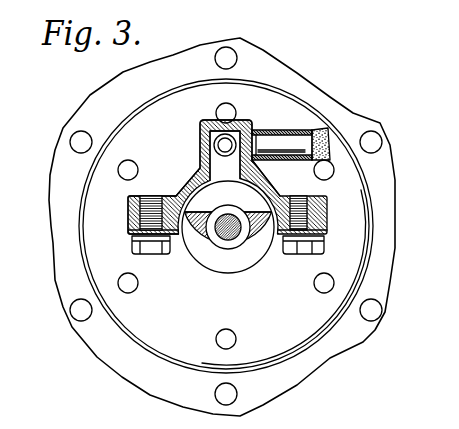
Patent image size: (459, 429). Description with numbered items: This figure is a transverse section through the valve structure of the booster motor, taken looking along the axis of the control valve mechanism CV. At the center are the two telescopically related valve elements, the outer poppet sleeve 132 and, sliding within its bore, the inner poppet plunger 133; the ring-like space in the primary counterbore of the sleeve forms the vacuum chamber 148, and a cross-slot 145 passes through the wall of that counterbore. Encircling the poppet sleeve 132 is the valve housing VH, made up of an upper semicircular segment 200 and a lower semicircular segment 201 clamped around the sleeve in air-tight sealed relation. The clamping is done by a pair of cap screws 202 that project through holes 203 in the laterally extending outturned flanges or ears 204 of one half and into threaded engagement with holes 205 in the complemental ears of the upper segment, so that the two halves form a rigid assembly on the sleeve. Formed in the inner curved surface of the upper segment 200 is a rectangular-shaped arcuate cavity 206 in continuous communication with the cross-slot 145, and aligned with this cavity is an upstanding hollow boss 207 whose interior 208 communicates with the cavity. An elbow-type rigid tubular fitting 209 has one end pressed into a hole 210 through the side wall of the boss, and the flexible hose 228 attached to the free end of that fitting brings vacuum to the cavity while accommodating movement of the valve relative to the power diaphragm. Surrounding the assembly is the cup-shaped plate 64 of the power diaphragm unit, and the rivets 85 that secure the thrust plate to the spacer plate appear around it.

The cup-shaped plate 64 is at (295, 115).
The rivets 85 is at (220, 337).
The hole 210 is at (224, 101).
The elbow-type rigid tubular fitting 209 is at (255, 140).
The flexible conduit or hose 228 is at (318, 152).
The hollow embossment or boss 207 is at (216, 122).
The interior of boss 208 is at (206, 155).
The cross-slot 145 is at (216, 188).
The valve housing VH is at (175, 182).
The upper semicircular segment 200 is at (192, 186).
The arcuate cavity 206 is at (263, 194).
The threaded holes 205 is at (128, 200).
The holes 203 is at (140, 226).
The cap screws 202 is at (133, 245).
The outturned flanges or ears 204 is at (325, 234).
The vacuum chamber 148 is at (195, 259).
The lower semicircular segment 201 is at (237, 275).
The control valve mechanism CV is at (246, 280).
The poppet sleeve 132 is at (249, 272).
The poppet plunger 133 is at (222, 240).